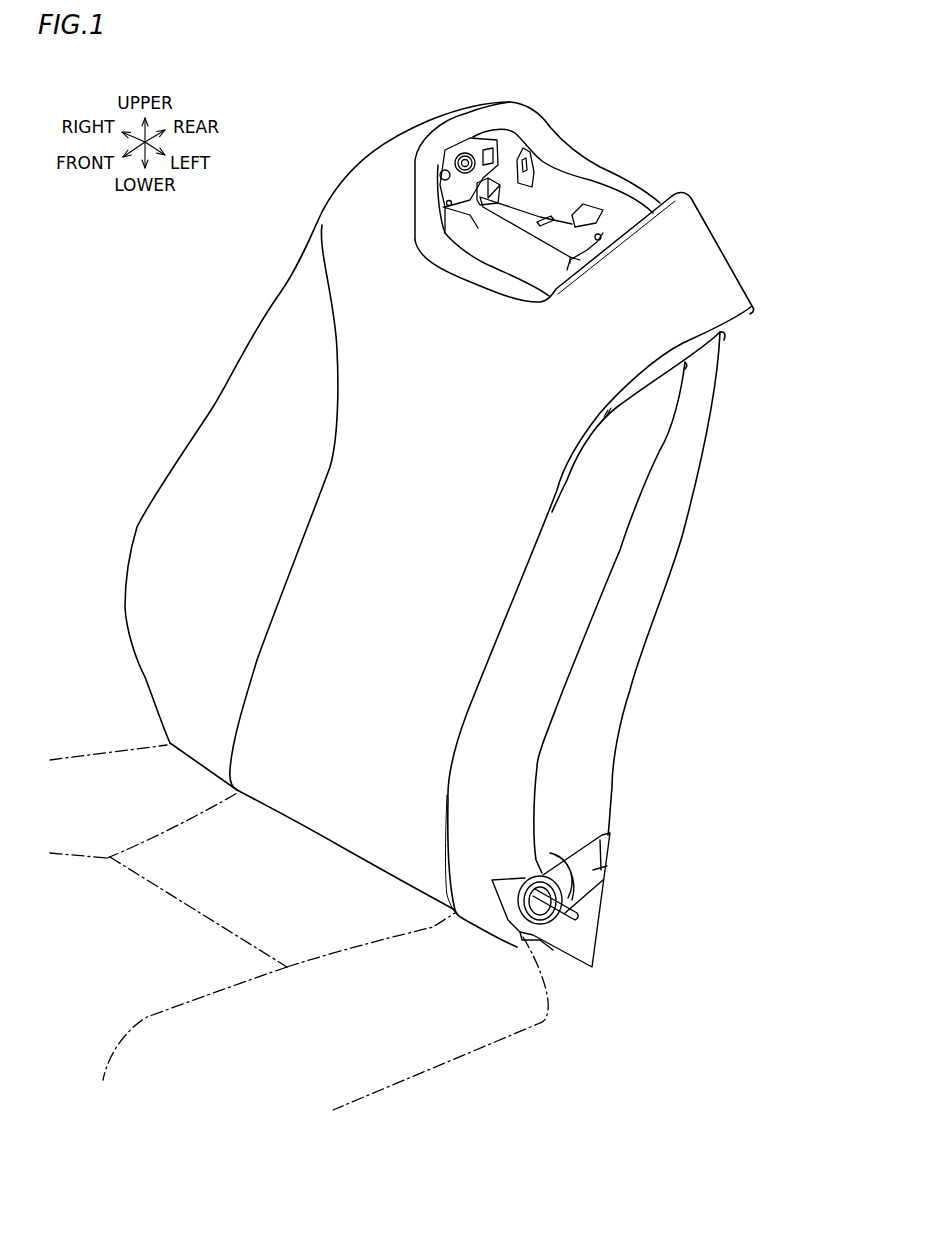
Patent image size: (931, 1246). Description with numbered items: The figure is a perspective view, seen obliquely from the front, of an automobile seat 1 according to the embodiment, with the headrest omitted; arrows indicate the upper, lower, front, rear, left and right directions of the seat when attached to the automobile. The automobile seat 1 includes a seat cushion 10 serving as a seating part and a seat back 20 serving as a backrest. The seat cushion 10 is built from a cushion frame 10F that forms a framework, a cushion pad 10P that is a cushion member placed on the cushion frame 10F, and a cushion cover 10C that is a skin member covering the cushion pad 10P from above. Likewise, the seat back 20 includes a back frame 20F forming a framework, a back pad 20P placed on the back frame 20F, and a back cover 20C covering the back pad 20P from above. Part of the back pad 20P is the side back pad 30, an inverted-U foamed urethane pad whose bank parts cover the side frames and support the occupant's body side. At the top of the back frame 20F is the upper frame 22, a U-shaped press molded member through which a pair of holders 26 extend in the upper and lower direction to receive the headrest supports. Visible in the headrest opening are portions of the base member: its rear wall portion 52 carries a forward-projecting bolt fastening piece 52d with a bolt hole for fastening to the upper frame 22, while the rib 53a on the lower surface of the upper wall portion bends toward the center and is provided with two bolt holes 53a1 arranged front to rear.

The automobile seat 1 is at (178, 300).
The seat cushion 10 is at (138, 750).
The cushion frame 10F is at (75, 793).
The cushion pad 10P is at (92, 775).
The cushion cover 10C is at (115, 777).
The seat back 20 is at (133, 527).
The back frame 20F is at (210, 493).
The back pad 20P is at (213, 455).
The back cover 20C is at (213, 413).
The upper frame 22 is at (440, 192).
The holder 26 is at (497, 170).
The side back pad 30 is at (597, 237).
The rear wall portion 52 is at (575, 195).
The bolt fastening piece 52d is at (590, 210).
The rib 53a is at (463, 153).
The bolt hole 53a1 is at (445, 176).